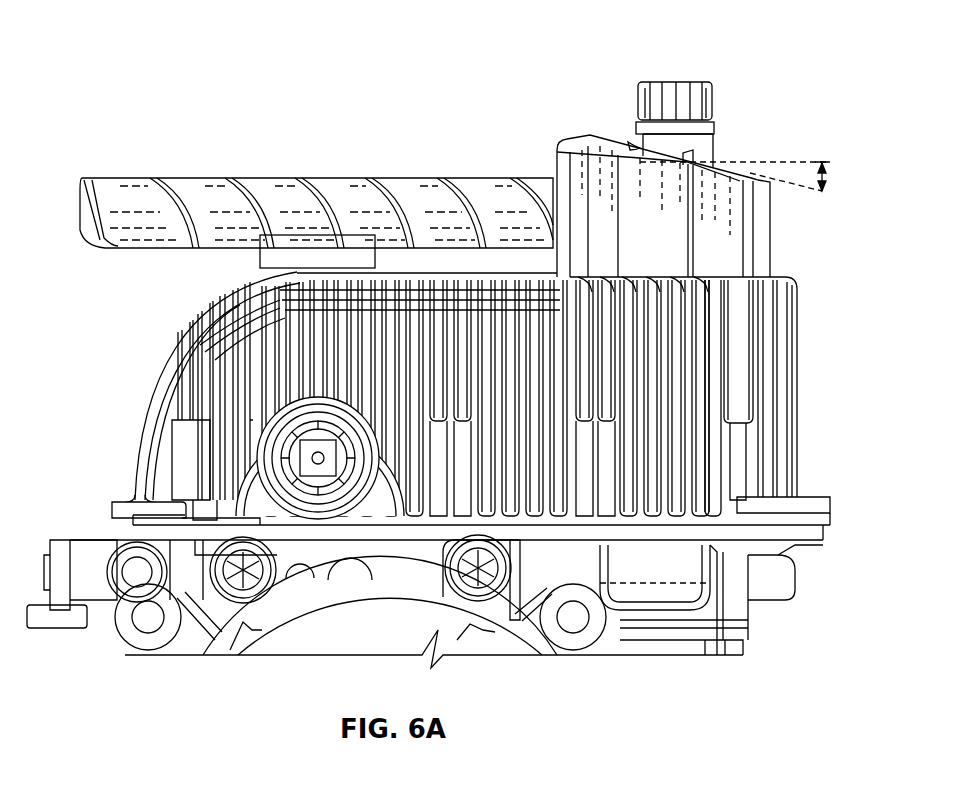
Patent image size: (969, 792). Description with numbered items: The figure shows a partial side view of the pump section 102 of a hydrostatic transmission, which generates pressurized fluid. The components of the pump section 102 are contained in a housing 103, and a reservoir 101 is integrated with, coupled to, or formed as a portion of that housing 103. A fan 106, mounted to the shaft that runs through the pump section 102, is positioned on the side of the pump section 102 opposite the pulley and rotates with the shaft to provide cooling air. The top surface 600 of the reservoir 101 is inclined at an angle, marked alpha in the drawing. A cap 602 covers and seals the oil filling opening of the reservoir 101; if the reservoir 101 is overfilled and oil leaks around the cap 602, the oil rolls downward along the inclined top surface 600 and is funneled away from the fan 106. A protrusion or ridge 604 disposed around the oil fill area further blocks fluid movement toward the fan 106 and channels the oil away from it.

The reservoir 101 is at (773, 224).
The pump section 102 is at (276, 58).
The housing 103 is at (178, 334).
The fan 106 is at (112, 180).
The top surface 600 is at (572, 140).
The cap 602 is at (662, 100).
The ridge 604 is at (628, 146).